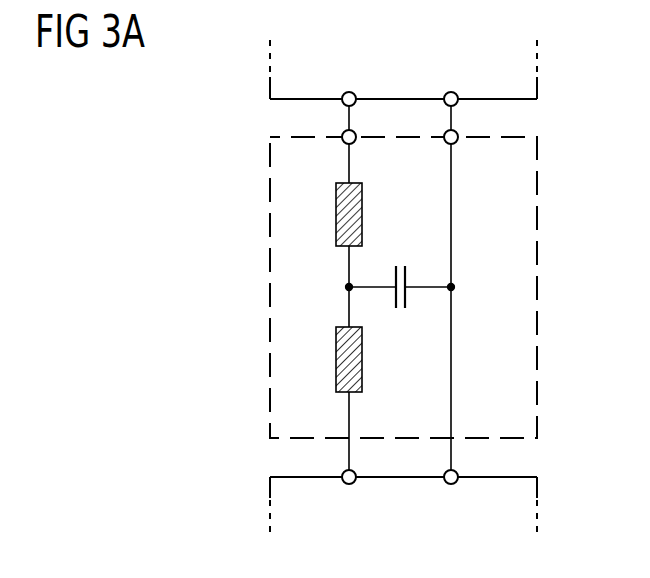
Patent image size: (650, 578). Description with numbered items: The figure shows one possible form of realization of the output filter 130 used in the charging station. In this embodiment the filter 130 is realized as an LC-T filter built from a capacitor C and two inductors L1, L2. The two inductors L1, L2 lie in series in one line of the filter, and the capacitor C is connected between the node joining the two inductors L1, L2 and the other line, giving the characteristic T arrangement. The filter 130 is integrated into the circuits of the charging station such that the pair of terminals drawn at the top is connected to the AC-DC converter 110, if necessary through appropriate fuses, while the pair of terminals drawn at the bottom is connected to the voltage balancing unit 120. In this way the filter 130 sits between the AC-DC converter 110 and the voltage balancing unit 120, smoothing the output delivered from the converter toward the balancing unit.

The AC-DC converter 110 is at (525, 89).
The voltage balancing unit 120 is at (527, 490).
The output filter 130 is at (437, 288).
The first inductor L1 is at (333, 214).
The second inductor L2 is at (333, 359).
The capacitor C is at (409, 306).